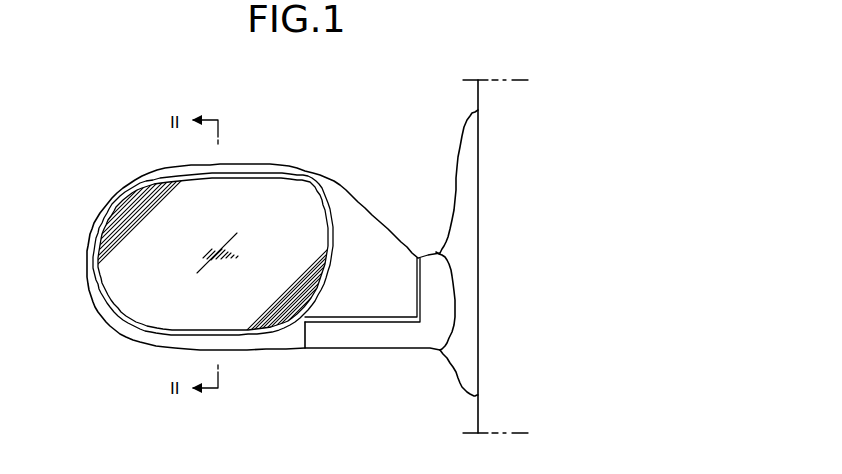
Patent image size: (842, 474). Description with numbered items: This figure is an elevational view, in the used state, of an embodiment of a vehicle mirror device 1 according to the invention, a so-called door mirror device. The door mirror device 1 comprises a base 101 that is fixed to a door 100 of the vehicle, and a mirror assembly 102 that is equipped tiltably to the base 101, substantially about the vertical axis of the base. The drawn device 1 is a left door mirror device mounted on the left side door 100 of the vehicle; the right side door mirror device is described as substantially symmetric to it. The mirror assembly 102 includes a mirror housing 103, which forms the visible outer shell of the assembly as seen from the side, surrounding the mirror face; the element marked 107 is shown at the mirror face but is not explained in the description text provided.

The vehicle mirror device 1 is at (319, 128).
The door 100 is at (487, 103).
The base 101 is at (367, 350).
The mirror assembly 102 is at (268, 160).
The mirror housing 103 is at (146, 184).
The mirror (glass) 107 is at (137, 232).